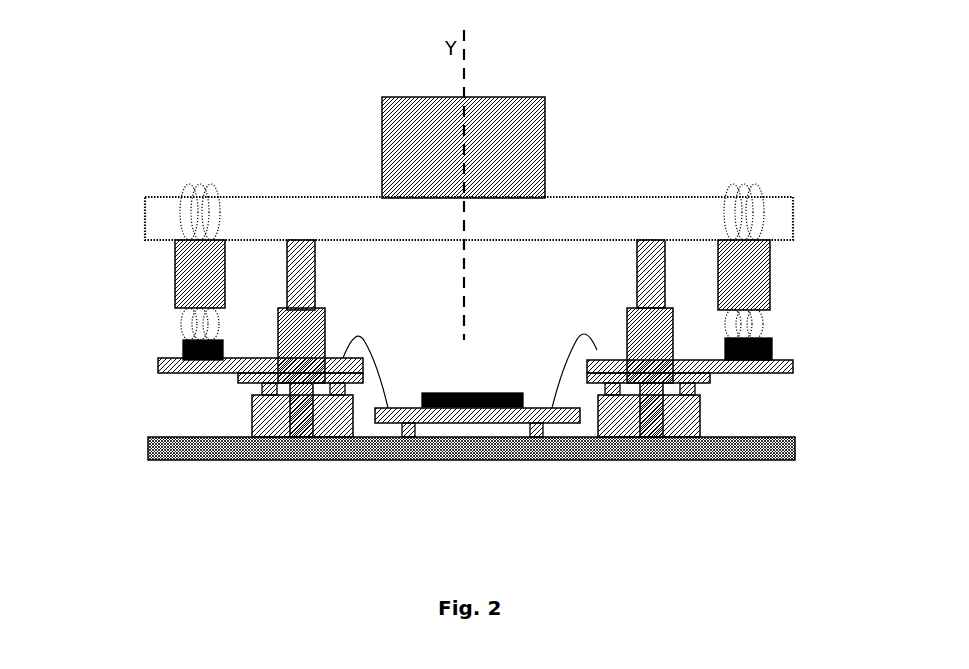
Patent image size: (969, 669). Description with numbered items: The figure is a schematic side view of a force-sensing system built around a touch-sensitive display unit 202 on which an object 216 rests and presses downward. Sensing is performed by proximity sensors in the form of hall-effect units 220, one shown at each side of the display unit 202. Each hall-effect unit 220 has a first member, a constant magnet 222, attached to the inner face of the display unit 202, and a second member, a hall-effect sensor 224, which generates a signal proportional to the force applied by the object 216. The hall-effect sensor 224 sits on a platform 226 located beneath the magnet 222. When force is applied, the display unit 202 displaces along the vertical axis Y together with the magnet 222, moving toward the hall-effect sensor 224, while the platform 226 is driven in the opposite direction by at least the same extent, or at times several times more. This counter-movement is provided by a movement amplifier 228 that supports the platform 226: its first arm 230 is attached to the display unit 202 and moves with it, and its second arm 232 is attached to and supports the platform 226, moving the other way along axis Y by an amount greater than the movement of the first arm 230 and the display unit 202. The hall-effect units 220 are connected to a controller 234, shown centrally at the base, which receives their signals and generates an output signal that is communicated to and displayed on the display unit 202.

The touch-sensitive display unit 202 is at (288, 200).
The object 216 is at (442, 155).
The hall-effect unit 220 is at (156, 338).
The constant magnet 222 is at (208, 262).
The hall-effect sensor 224 is at (200, 357).
The platform 226 is at (195, 366).
The movement amplifier 228 is at (308, 378).
The first arm 230 is at (303, 283).
The second arm 232 is at (270, 383).
The controller 234 is at (497, 407).